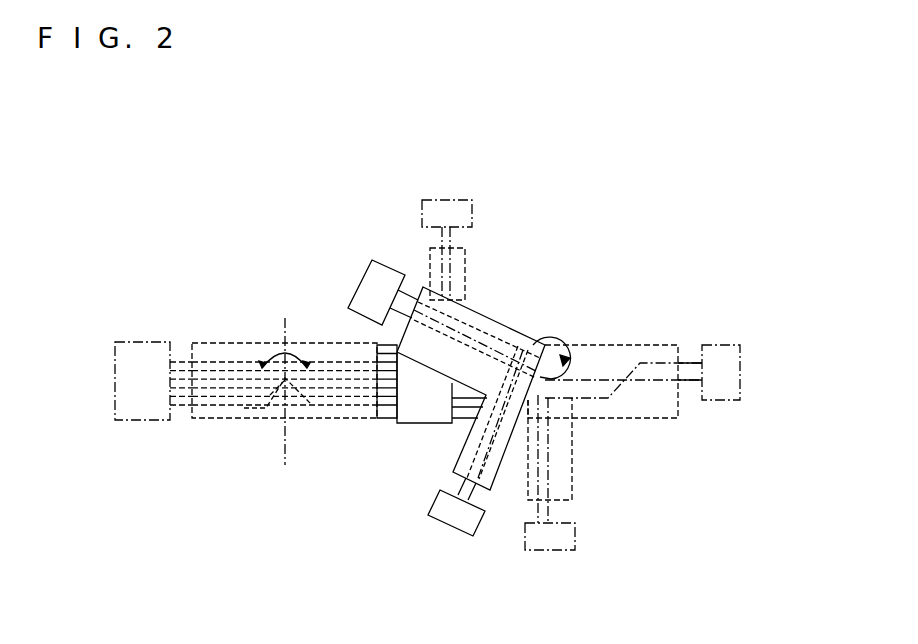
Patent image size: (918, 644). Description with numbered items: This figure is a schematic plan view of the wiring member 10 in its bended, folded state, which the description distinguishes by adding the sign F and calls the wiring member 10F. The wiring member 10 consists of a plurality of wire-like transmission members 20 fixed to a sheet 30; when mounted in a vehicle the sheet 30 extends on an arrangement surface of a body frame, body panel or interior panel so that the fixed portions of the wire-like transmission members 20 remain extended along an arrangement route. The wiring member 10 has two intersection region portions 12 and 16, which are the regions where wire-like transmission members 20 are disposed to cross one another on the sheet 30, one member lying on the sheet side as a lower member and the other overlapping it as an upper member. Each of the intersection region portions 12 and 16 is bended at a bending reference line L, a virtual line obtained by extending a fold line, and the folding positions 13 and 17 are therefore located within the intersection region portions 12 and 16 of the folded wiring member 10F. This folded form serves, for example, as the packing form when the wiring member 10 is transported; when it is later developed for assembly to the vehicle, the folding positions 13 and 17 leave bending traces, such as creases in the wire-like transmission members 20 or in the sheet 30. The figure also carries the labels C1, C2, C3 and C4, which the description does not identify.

The wiring member 10 is at (637, 444).
The wiring member in folded state 10F is at (363, 479).
The intersection region portion 12 is at (550, 401).
The folding position 13 is at (562, 340).
The intersection region portion 16 is at (288, 421).
The folding position 17 is at (275, 410).
The wire-like transmission member 20 is at (455, 247).
The sheet 30 is at (487, 317).
The camera / imaging unit C1 is at (143, 425).
The camera / light unit C2 is at (382, 268).
The camera / light unit C3 is at (455, 518).
The camera / light unit C4 is at (448, 210).
The bending reference line L is at (284, 318).